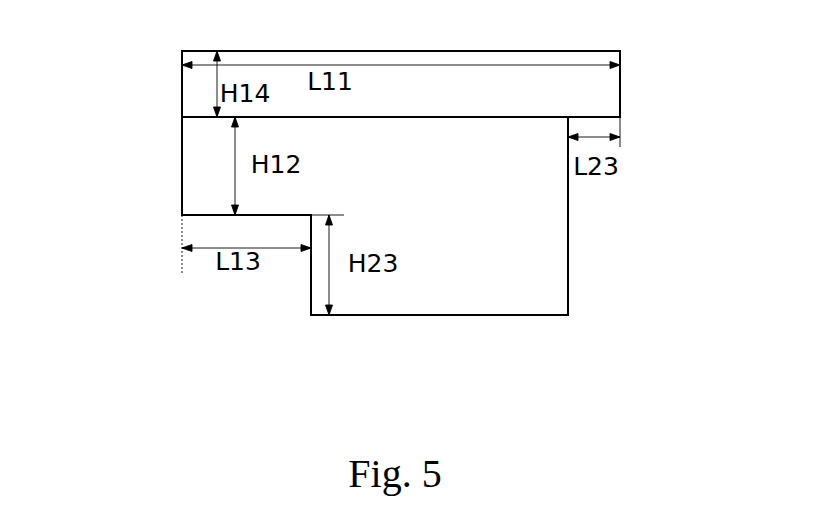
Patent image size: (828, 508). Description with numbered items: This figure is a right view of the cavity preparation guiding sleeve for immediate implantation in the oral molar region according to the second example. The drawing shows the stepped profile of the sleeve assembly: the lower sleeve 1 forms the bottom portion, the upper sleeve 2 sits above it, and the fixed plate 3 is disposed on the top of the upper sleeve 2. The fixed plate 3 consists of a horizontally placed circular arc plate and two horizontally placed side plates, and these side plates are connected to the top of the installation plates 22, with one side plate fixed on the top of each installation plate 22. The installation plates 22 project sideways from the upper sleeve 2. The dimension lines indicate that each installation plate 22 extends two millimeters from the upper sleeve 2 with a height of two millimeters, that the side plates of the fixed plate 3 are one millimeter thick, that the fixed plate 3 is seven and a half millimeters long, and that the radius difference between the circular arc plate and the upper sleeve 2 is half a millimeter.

The lower sleeve 1 is at (427, 287).
The upper sleeve 2 is at (542, 153).
The fixed plate 3 is at (205, 90).
The installation plates 22 is at (198, 183).